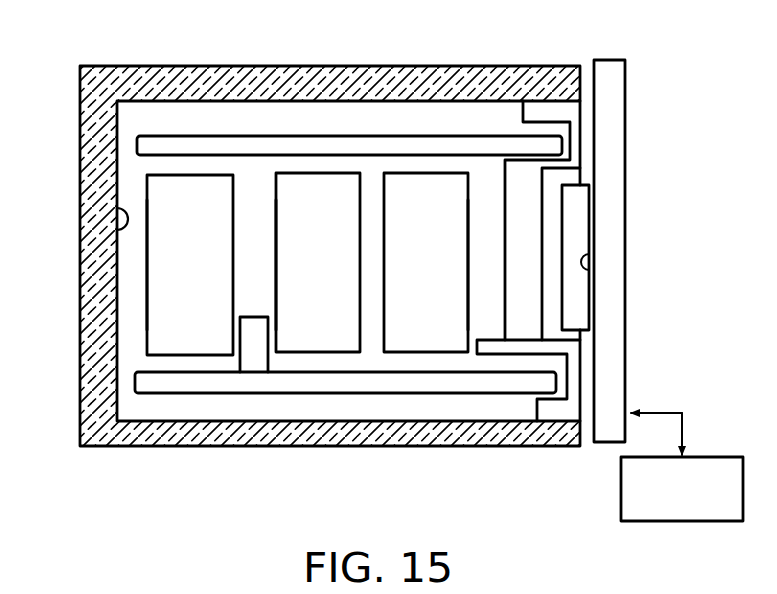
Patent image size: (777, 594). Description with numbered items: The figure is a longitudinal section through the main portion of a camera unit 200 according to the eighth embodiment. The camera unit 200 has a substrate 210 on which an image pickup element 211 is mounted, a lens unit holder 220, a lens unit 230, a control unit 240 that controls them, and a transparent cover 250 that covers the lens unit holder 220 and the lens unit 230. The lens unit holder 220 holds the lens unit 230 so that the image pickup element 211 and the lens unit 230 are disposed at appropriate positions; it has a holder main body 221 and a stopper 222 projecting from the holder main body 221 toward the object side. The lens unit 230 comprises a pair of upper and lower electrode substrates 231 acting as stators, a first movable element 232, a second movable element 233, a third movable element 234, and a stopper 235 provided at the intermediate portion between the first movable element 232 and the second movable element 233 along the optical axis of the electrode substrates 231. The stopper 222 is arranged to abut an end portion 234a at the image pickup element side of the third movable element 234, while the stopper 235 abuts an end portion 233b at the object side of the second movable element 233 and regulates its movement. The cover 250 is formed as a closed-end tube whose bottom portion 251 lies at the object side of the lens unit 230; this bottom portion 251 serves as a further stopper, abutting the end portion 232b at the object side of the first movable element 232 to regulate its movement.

The camera unit 200 is at (650, 125).
The substrate 210 is at (612, 60).
The image pickup element 211 is at (590, 272).
The lens unit holder 220 is at (551, 104).
The holder main body 221 is at (518, 197).
The stopper 222 is at (490, 348).
The lens unit 230 is at (175, 395).
The electrode substrates 231 is at (137, 147).
The first movable element 232 is at (158, 330).
The end portion at the object side of the first movable element 232b is at (147, 302).
The second movable element 233 is at (318, 182).
The end portion at the object side of the second movable element 233b is at (275, 212).
The third movable element 234 is at (438, 333).
The end portion at the image pickup element side of the third movable element 234a is at (470, 212).
The stopper 235 is at (252, 360).
The control unit 240 is at (715, 457).
The transparent cover 250 is at (165, 66).
The bottom portion 251 is at (117, 224).